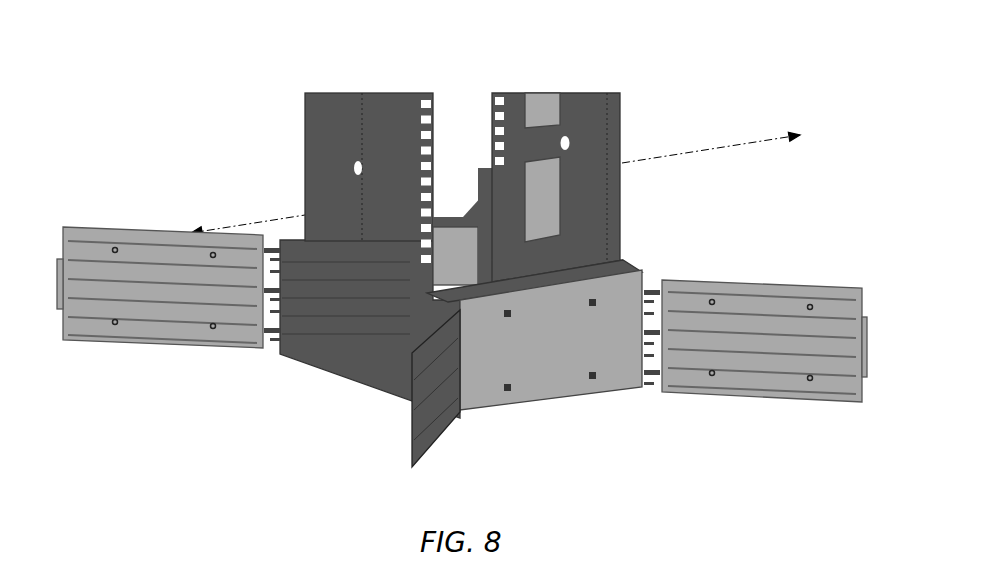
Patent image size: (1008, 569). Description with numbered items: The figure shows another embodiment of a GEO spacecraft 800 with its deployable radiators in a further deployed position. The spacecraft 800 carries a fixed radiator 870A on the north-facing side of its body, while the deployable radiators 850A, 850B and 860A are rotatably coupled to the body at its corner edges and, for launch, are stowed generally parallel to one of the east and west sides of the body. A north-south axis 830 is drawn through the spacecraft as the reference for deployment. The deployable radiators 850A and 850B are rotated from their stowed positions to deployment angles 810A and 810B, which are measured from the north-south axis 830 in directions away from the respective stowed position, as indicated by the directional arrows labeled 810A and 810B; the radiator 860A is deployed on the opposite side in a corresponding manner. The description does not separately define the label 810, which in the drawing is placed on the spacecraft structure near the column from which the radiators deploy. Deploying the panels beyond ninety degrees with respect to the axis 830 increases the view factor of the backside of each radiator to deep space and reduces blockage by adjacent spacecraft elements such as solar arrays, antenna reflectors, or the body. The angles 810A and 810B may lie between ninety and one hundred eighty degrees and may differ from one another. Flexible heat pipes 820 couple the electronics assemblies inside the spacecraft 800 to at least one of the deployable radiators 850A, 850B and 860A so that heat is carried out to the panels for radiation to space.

The GEO spacecraft 800 is at (345, 48).
The tower column 810 is at (330, 153).
The deployment angle 810A is at (458, 440).
The deployment angle 810B is at (694, 412).
The flexible heat pipes 820 is at (740, 292).
The north-south axis 830 is at (700, 150).
The deployable radiator 850A is at (395, 462).
The deployable radiator 850B is at (778, 412).
The deployable radiator 860A is at (145, 199).
The fixed radiator 870A is at (326, 374).